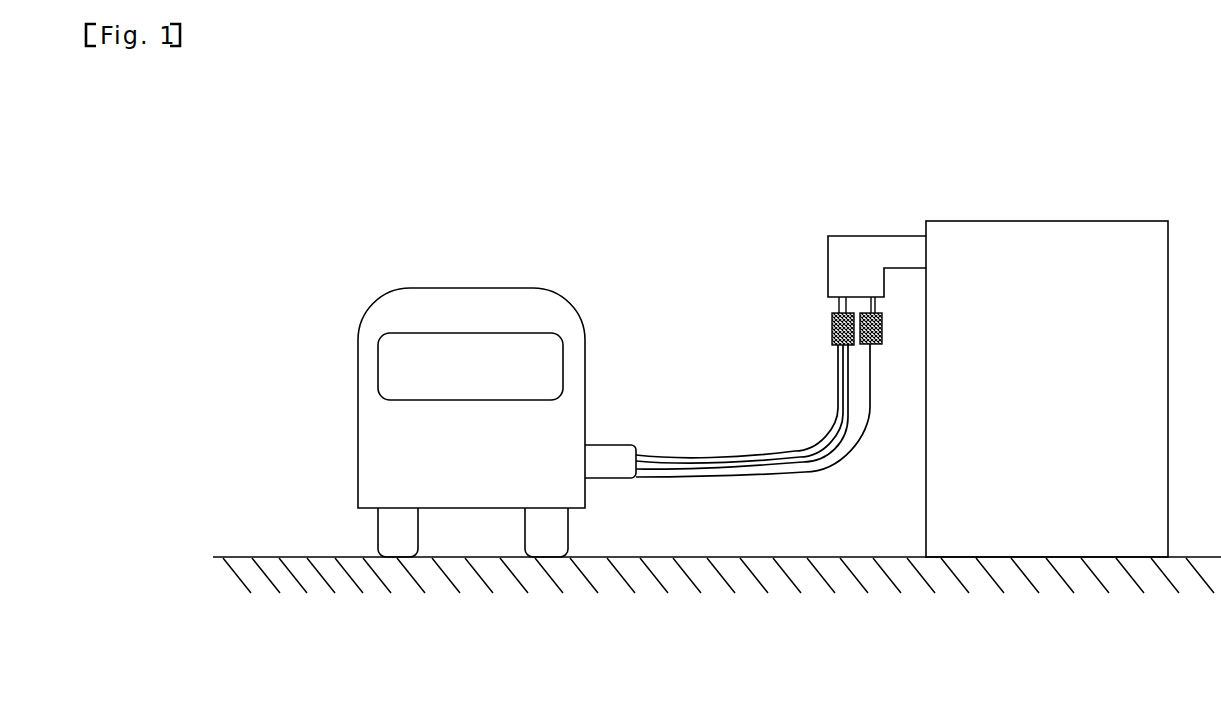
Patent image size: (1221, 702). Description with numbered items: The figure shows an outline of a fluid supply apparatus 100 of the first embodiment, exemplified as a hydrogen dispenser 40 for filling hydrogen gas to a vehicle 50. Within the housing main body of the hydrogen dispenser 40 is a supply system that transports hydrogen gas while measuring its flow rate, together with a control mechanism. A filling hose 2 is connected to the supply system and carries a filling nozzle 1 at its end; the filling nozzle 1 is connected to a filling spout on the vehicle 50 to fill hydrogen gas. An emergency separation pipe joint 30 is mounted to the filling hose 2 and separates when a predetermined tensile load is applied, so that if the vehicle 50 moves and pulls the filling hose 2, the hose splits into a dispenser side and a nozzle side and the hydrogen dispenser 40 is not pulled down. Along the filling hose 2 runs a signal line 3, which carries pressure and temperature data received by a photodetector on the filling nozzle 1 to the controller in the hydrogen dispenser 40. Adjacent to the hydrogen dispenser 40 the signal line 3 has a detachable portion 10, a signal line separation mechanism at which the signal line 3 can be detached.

The fluid supply apparatus 100 is at (728, 240).
The vehicle 50 is at (585, 352).
The filling nozzle 1 is at (615, 444).
The filling hose 2 is at (730, 456).
The signal line 3 is at (743, 478).
The detachable portion 10 is at (882, 323).
The emergency separation pipe joint 30 is at (832, 323).
The hydrogen dispenser 40 is at (1123, 225).